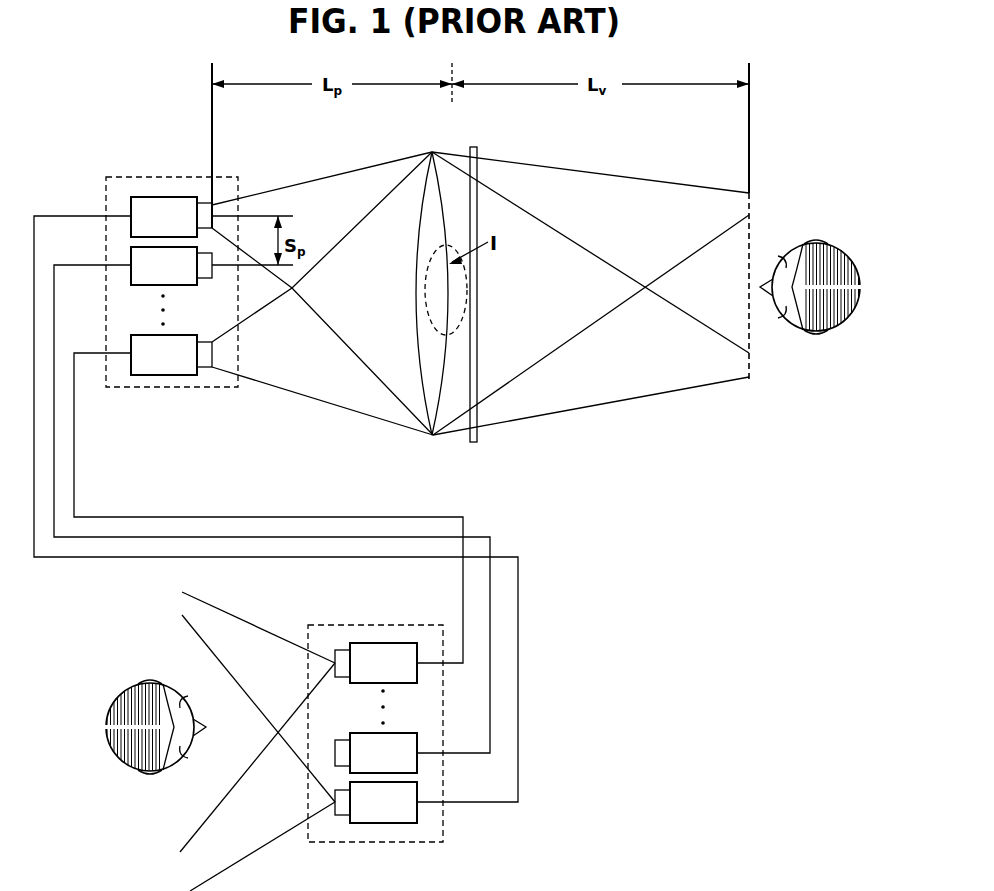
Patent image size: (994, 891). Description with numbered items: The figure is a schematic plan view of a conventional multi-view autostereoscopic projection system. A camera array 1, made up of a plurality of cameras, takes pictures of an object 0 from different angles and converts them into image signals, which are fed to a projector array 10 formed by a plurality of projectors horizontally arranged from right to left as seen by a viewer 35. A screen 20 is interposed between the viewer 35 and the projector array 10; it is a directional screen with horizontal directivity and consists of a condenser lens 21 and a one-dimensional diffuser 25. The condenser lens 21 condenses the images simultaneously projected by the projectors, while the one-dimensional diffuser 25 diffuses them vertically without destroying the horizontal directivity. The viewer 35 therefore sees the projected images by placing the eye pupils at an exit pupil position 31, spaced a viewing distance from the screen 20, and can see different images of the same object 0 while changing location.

The projector array 10 is at (170, 176).
The screen 20 is at (466, 295).
The condenser lens 21 is at (432, 436).
The one-dimensional diffuser 25 is at (477, 442).
The exit pupil position 31 is at (752, 245).
The viewer 35 is at (838, 240).
The camera array 1 is at (380, 625).
The object 0 is at (104, 727).